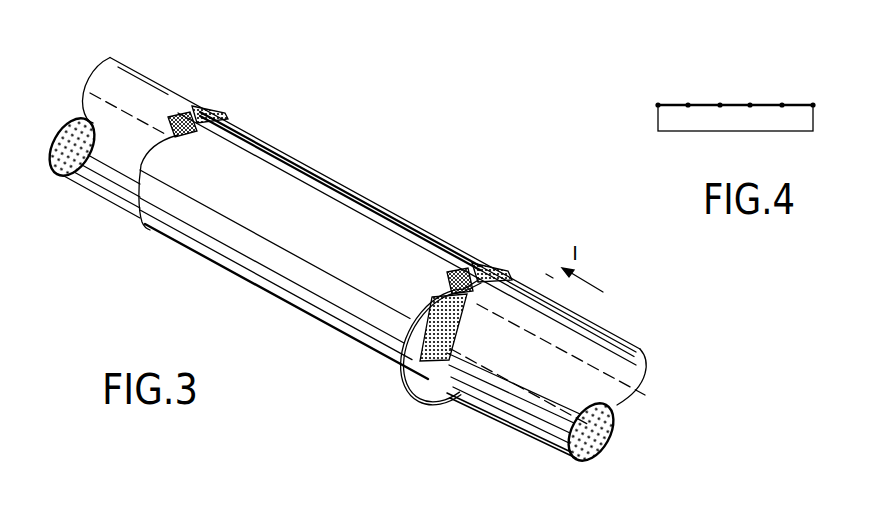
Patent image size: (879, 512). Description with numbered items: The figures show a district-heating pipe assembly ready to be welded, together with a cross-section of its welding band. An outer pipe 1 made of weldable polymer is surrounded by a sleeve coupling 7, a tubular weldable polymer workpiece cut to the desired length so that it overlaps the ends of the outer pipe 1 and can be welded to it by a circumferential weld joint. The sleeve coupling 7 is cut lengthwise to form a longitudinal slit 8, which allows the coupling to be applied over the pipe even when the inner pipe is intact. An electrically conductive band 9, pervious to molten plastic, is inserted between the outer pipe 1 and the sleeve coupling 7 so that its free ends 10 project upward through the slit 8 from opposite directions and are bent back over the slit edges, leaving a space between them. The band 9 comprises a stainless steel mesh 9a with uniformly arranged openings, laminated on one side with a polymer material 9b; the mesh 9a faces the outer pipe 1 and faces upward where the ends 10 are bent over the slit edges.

In FIG. 3, the outer pipe 1 is at (108, 145).
In FIG. 3, the sleeve coupling 7 is at (333, 252).
In FIG. 3, the longitudinal slit 8 is at (320, 187).
In FIG. 3, the electrically conductive band 9 is at (418, 345).
In FIG. 4, the electrically conductive band 9 is at (727, 98).
In FIG. 4, the mesh 9a is at (782, 104).
In FIG. 4, the polymer material 9b is at (693, 124).
In FIG. 3, the band free ends 10 is at (207, 110).